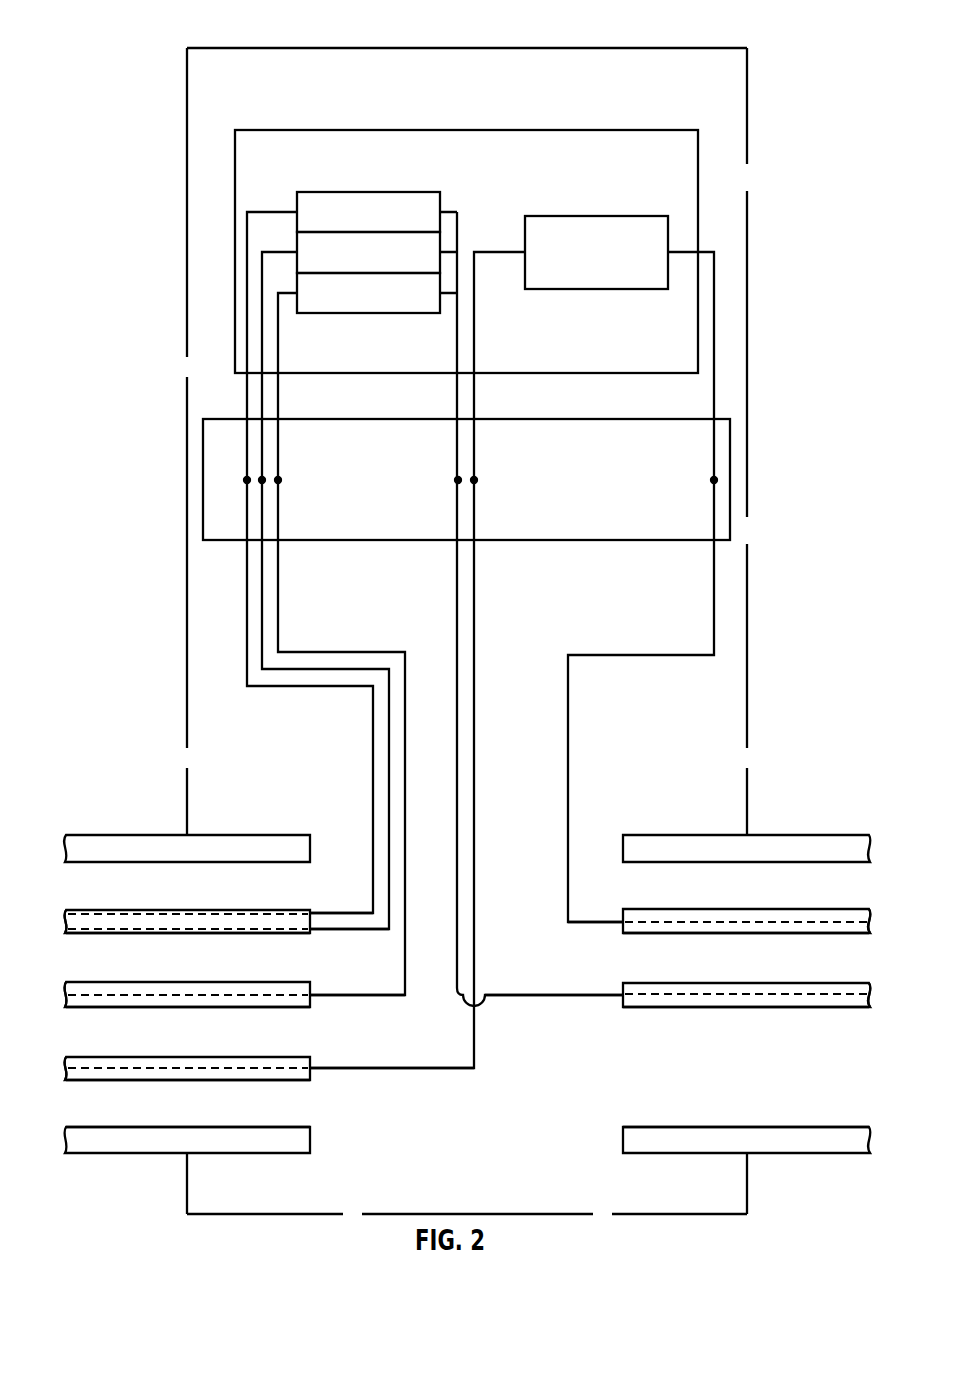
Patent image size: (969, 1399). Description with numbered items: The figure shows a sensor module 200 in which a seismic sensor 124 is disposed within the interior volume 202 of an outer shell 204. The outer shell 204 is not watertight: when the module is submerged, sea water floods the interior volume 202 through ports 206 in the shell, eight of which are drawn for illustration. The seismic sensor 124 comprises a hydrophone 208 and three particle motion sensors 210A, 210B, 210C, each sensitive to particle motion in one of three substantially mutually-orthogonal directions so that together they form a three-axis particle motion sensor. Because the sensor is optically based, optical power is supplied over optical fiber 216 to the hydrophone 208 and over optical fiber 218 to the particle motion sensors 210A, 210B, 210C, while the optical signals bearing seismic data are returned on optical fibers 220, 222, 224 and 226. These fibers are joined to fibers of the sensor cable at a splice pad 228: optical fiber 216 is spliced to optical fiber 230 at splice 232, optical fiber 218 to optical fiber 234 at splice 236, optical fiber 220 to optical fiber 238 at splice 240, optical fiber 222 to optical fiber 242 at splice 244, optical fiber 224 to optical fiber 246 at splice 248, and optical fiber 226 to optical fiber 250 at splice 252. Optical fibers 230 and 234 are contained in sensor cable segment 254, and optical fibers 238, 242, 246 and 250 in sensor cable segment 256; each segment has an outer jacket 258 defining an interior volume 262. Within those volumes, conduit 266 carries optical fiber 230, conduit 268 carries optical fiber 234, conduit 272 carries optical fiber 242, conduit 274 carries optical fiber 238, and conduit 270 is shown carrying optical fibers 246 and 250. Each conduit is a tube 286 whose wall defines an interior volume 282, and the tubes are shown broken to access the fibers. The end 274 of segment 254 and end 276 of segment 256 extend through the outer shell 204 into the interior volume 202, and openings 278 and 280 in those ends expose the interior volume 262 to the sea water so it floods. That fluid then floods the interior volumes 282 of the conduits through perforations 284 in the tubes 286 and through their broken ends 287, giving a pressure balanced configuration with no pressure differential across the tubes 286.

The sensor module 200 is at (158, 28).
The interior volume 202 is at (294, 84).
The seismic sensor 124 is at (296, 130).
The outer shell 204 is at (186, 157).
The ports 206 is at (748, 179).
The hydrophone 208 is at (605, 216).
The particle motion sensor 210A is at (392, 226).
The particle motion sensor 210B is at (392, 267).
The particle motion sensor 210C is at (392, 307).
The optical fiber 216 is at (714, 378).
The optical fiber 218 is at (457, 360).
The optical fiber 220 is at (476, 360).
The optical fiber 222 is at (282, 360).
The optical fiber 224 is at (262, 287).
The optical fiber 226 is at (247, 240).
The splice pad 228 is at (620, 418).
The optical fiber 230 is at (713, 596).
The splice 232 is at (712, 480).
The optical fiber 234 is at (457, 596).
The splice 236 is at (456, 480).
The optical fiber 238 is at (475, 596).
The splice 240 is at (476, 480).
The optical fiber 242 is at (350, 652).
The splice 244 is at (280, 480).
The optical fiber 246 is at (260, 597).
The splice 248 is at (262, 478).
The optical fiber 250 is at (245, 567).
The splice 252 is at (247, 480).
The sensor cable segment 254 is at (866, 830).
The sensor cable segment 256 is at (103, 830).
The outer jacket 258 is at (75, 1155).
The interior volume 262 is at (117, 1110).
The conduit 266 is at (848, 937).
The conduit 268 is at (805, 1012).
The conduit 270 is at (288, 940).
The conduit 272 is at (290, 1010).
The conduit 274 is at (232, 1086).
The end 276 is at (300, 830).
The opening 278 is at (634, 879).
The opening 280 is at (312, 878).
The interior volume 282 is at (838, 918).
The perforations 284 is at (255, 910).
The tube 286 is at (128, 910).
The broken ends 287 is at (318, 935).